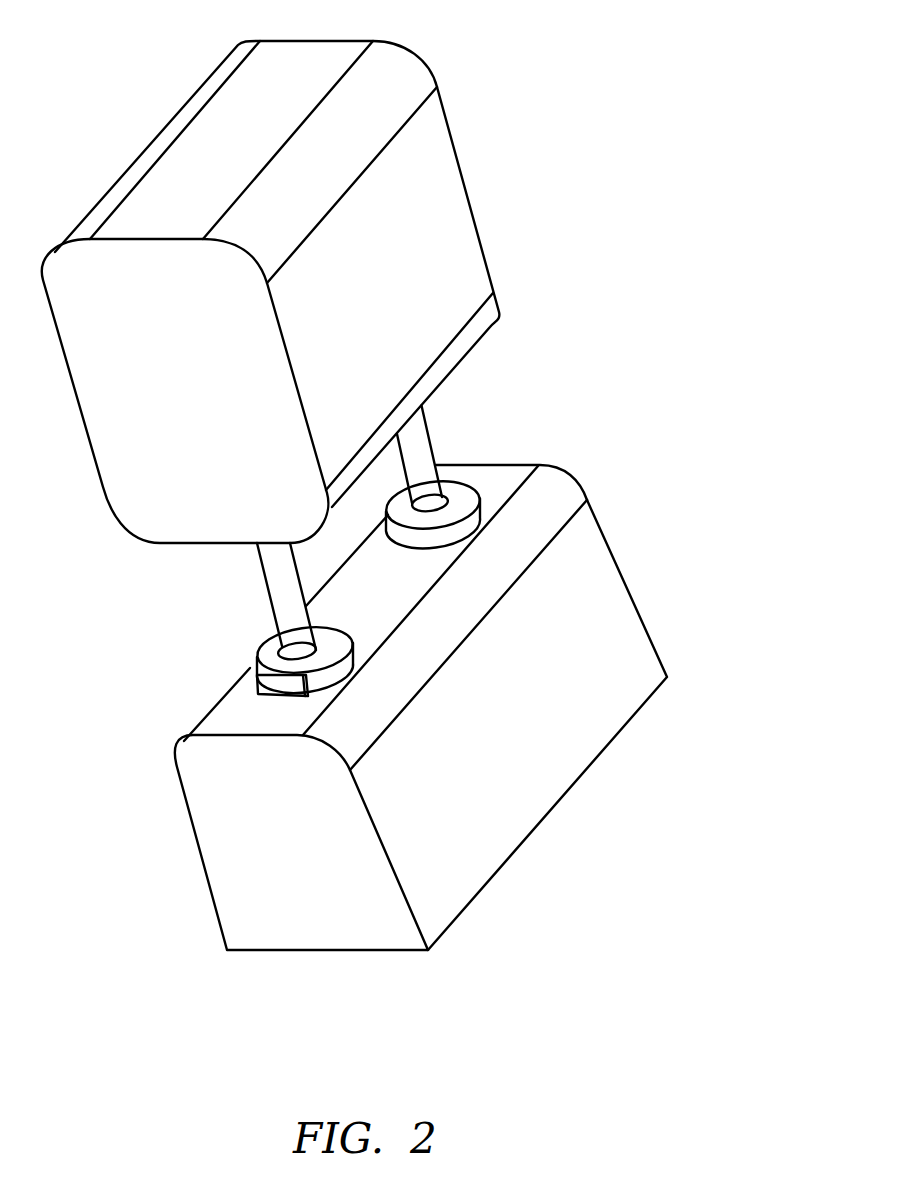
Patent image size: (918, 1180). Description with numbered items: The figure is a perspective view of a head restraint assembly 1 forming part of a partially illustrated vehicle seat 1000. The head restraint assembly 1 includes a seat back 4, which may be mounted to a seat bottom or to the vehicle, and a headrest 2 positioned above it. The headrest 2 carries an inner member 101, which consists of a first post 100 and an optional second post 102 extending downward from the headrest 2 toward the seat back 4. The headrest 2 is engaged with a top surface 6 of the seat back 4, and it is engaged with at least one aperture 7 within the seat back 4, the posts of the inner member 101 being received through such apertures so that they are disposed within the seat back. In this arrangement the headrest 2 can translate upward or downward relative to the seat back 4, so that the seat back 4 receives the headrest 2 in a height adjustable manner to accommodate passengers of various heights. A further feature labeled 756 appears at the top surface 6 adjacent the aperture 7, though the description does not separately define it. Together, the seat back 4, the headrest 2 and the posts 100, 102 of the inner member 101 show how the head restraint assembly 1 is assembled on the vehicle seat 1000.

The vehicle seat 1000 is at (422, 475).
The headrest 2 is at (477, 213).
The first post 100 is at (264, 572).
The inner member 101 is at (346, 509).
The second post 102 is at (429, 437).
The head restraint assembly 1 is at (251, 668).
The aperture 7 is at (466, 476).
The sleeve top surface 756 is at (467, 498).
The seat back 4 is at (401, 707).
The top surface 6 is at (231, 723).